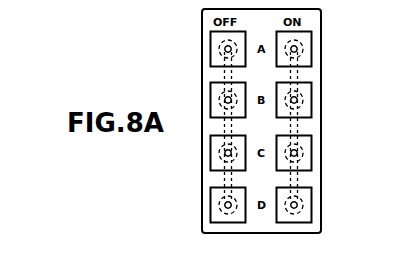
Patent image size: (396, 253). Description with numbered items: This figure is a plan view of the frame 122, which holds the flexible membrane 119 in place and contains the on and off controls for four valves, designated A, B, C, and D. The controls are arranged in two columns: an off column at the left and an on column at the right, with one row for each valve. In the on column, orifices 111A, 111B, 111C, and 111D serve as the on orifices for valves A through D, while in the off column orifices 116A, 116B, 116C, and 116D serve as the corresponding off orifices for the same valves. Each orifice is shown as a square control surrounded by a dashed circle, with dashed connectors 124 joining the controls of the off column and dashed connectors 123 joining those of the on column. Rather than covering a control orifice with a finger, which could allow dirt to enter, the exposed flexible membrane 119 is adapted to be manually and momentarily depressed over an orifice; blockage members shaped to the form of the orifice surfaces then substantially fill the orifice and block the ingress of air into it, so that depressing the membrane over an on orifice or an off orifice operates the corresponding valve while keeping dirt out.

The off orifice 116A is at (228, 49).
The off orifice 116B is at (228, 100).
The off orifice 116C is at (228, 153).
The off orifice 116D is at (228, 205).
The on orifice 111A is at (294, 49).
The on orifice 111B is at (294, 100).
The on orifice 111C is at (294, 153).
The on orifice 111D is at (294, 205).
The flexible membrane 119 is at (221, 104).
The frame 122 is at (321, 72).
The ON column connector 123 is at (305, 185).
The OFF column connector 124 is at (226, 177).